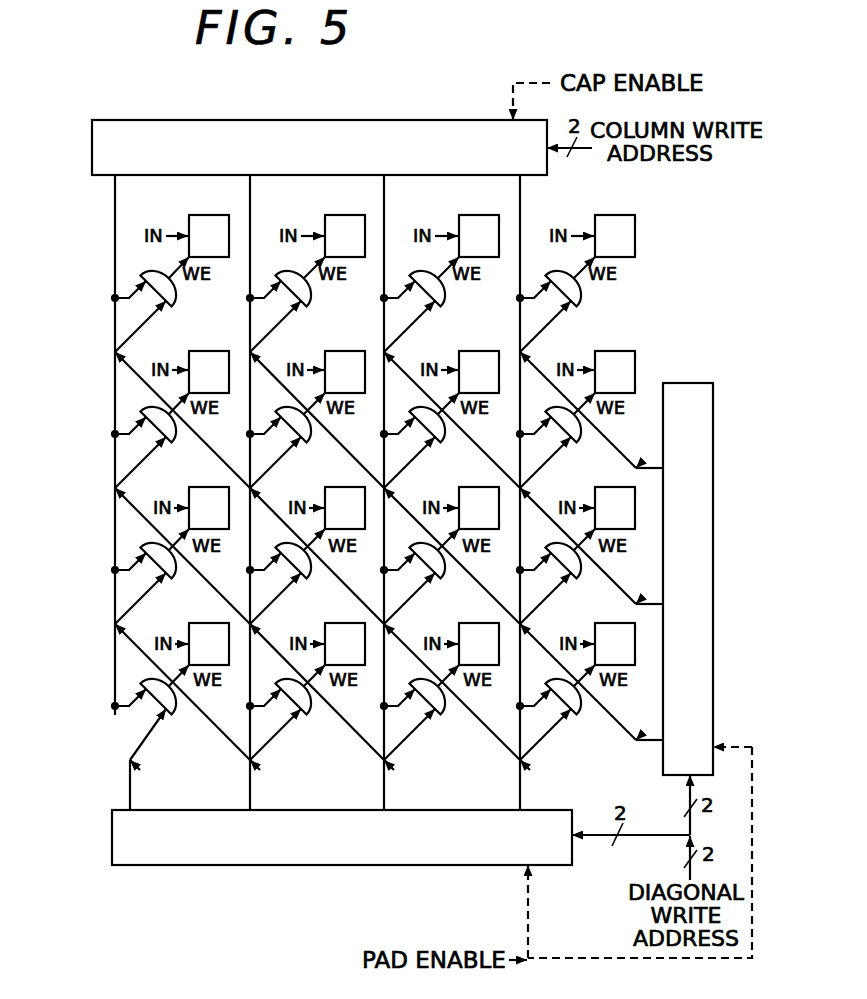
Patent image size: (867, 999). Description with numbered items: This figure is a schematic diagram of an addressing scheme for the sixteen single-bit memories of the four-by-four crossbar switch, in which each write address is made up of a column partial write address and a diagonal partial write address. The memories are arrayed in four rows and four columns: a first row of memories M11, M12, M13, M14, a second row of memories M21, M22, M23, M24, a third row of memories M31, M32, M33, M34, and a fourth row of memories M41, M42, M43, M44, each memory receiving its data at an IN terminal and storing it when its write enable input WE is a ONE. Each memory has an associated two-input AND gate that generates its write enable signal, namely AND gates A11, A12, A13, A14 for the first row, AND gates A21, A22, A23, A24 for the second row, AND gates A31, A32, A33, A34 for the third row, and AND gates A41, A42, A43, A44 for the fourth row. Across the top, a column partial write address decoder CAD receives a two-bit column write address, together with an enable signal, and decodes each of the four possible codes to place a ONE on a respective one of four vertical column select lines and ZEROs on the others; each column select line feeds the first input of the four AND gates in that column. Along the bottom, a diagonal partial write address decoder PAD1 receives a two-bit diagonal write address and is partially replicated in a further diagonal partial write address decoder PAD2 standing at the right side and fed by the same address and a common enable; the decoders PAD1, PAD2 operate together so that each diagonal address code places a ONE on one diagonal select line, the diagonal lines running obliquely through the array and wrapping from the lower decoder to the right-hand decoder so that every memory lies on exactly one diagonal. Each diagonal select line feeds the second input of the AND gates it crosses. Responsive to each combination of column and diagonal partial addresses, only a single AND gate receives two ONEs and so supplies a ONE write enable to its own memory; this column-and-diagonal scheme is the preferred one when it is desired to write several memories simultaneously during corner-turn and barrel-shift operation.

The column partial write address decoder CAD is at (343, 120).
The diagonal partial write address decoder PAD1 is at (112, 838).
The further diagonal partial write address decoder PAD2 is at (688, 383).
The single-bit memory M11 is at (209, 236).
The single-bit memory M12 is at (345, 236).
The single-bit memory M13 is at (479, 236).
The single-bit memory M14 is at (615, 236).
The single-bit memory M21 is at (209, 372).
The single-bit memory M22 is at (345, 372).
The single-bit memory M23 is at (479, 372).
The single-bit memory M24 is at (615, 372).
The single-bit memory M31 is at (209, 508).
The single-bit memory M32 is at (345, 508).
The single-bit memory M33 is at (479, 508).
The single-bit memory M34 is at (615, 508).
The single-bit memory M41 is at (209, 644).
The single-bit memory M42 is at (345, 644).
The single-bit memory M43 is at (479, 644).
The single-bit memory M44 is at (615, 644).
The AND gate A11 is at (174, 301).
The AND gate A12 is at (309, 301).
The AND gate A13 is at (443, 301).
The AND gate A14 is at (579, 301).
The AND gate A21 is at (175, 441).
The AND gate A22 is at (310, 441).
The AND gate A23 is at (444, 441).
The AND gate A24 is at (580, 441).
The AND gate A31 is at (175, 577).
The AND gate A32 is at (310, 577).
The AND gate A33 is at (444, 577).
The AND gate A34 is at (580, 577).
The AND gate A41 is at (175, 713).
The AND gate A42 is at (310, 713).
The AND gate A43 is at (444, 713).
The AND gate A44 is at (580, 713).